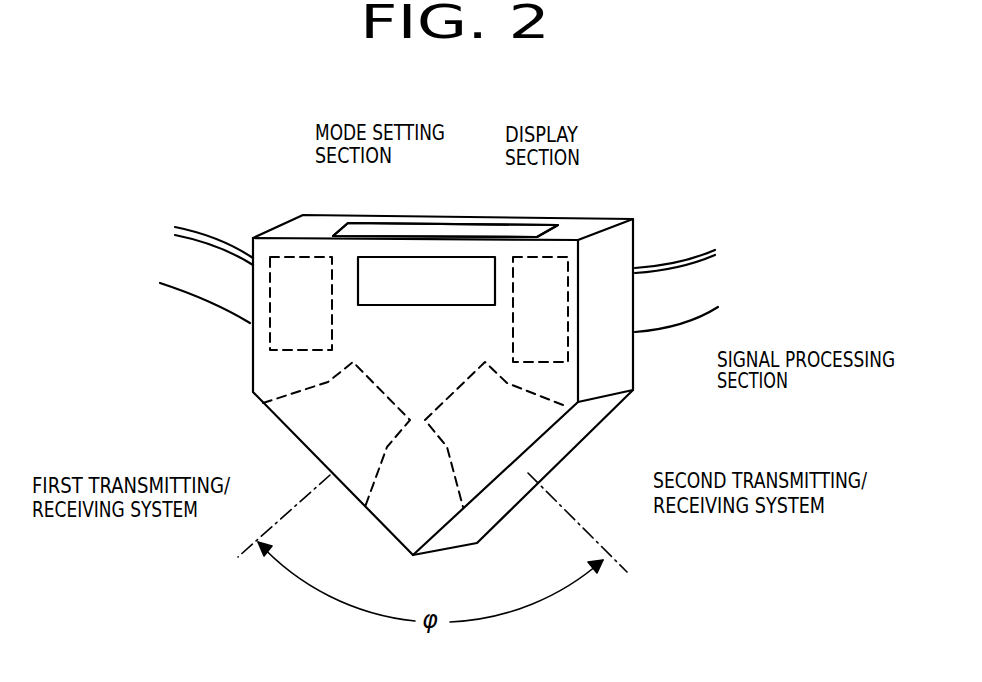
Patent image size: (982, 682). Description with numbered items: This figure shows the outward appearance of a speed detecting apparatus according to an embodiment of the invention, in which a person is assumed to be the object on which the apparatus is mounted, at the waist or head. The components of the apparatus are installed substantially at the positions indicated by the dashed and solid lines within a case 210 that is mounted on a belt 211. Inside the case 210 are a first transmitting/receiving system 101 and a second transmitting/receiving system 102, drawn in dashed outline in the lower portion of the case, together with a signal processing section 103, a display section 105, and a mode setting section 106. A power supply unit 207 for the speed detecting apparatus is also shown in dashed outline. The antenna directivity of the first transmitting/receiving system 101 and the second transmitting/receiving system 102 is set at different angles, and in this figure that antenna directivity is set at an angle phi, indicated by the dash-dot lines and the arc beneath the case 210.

The first transmitting/receiving system 101 is at (288, 430).
The second transmitting/receiving system 102 is at (547, 432).
The signal processing section 103 is at (566, 352).
The display section 105 is at (498, 228).
The mode setting section 106 is at (386, 263).
The power supply unit 207 is at (268, 328).
The case 210 is at (637, 242).
The belt 211 is at (203, 240).